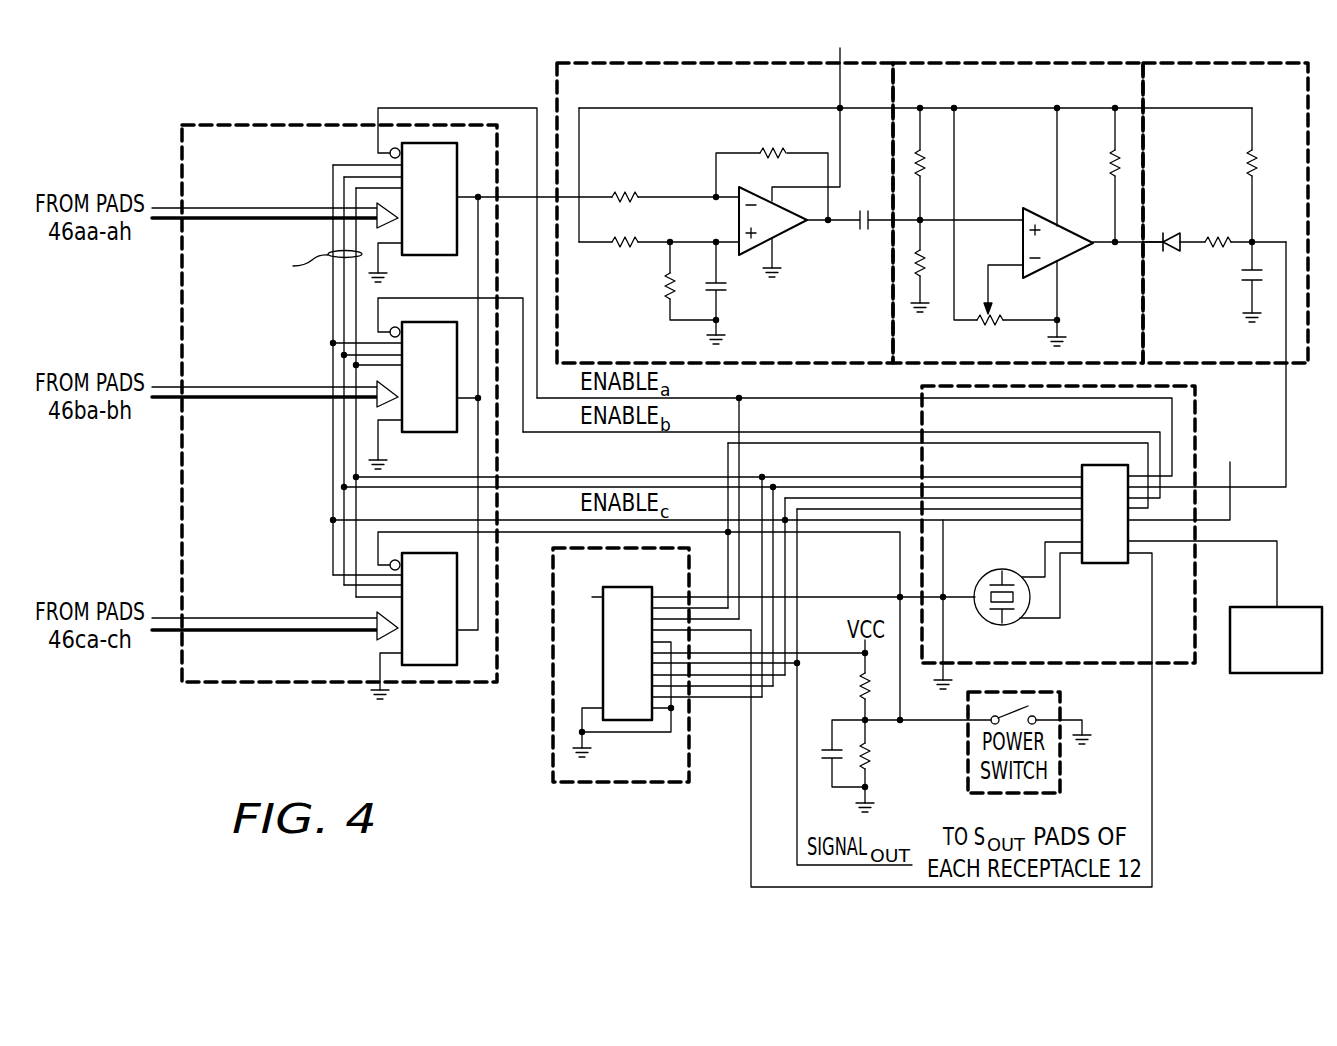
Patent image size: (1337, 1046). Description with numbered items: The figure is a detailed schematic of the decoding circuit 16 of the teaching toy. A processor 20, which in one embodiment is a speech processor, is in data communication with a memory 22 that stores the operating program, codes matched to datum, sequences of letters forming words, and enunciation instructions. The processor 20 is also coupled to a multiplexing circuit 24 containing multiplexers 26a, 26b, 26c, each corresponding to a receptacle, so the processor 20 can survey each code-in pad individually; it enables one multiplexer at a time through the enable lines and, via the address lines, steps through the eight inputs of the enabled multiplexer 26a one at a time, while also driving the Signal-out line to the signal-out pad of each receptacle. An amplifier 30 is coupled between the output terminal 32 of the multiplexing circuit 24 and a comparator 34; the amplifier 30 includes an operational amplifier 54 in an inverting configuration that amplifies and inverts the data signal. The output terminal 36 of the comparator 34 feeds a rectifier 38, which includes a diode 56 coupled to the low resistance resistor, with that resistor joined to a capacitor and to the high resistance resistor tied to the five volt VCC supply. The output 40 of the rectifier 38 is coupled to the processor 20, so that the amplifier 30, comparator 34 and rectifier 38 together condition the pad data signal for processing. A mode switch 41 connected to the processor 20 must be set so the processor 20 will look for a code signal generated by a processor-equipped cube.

The decoder circuit 16 is at (428, 747).
The multiplexing circuit 24 is at (269, 575).
The multiplexer 26a is at (450, 210).
The multiplexer 26b is at (450, 388).
The multiplexer 26c is at (450, 620).
The output terminal 32 is at (497, 197).
The amplifier 30 is at (797, 100).
The operational amplifier 54 is at (786, 236).
The comparator 34 is at (1118, 100).
The rectifier 38 is at (1299, 100).
The output terminal 36 is at (1147, 236).
The diode 56 is at (1168, 252).
The output 40 is at (1286, 368).
The processor 20 is at (1174, 665).
The memory 22 is at (654, 770).
The mode switch 41 is at (1312, 606).